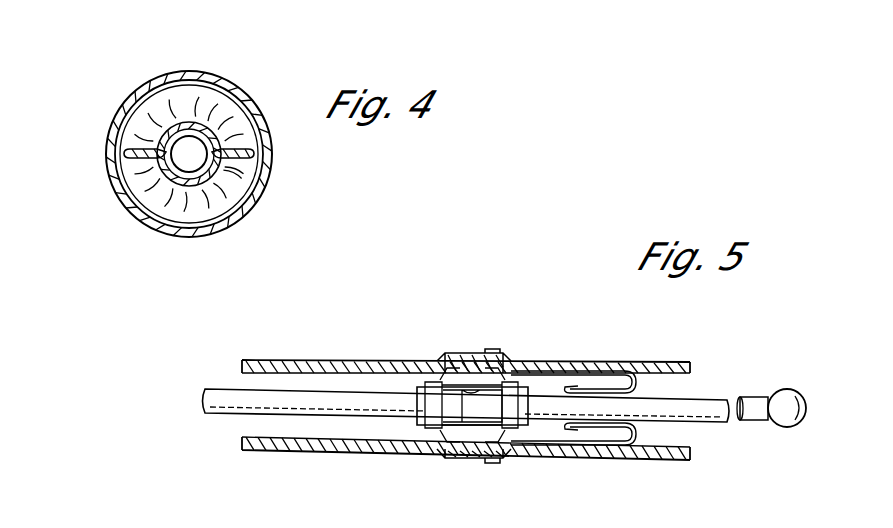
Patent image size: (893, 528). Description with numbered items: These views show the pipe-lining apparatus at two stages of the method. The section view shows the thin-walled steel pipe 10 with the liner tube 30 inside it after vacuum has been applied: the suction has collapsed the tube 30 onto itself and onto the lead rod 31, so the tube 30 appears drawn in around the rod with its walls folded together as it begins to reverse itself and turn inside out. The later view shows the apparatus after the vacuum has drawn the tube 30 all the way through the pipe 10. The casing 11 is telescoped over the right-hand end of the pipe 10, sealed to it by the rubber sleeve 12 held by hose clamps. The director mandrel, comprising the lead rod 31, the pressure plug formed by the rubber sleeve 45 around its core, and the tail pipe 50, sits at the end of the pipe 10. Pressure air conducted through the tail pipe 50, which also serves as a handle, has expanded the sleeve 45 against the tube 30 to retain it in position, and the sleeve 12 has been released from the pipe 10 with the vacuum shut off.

In FIG. 4, the steel pipe 10 is at (108, 132).
In FIG. 5, the steel pipe 10 is at (340, 360).
In FIG. 5, the casing 11 is at (678, 460).
In FIG. 5, the rubber sleeve 12 is at (475, 461).
In FIG. 4, the tube 30 is at (189, 73).
In FIG. 5, the tube 30 is at (250, 436).
In FIG. 5, the lead rod 31 is at (712, 398).
In FIG. 5, the rubber sleeve 45 is at (468, 358).
In FIG. 5, the tail pipe 50 is at (222, 392).